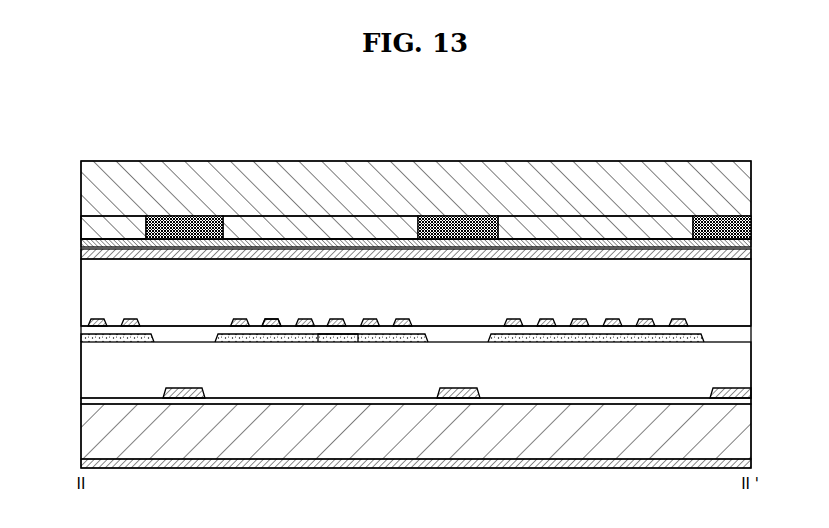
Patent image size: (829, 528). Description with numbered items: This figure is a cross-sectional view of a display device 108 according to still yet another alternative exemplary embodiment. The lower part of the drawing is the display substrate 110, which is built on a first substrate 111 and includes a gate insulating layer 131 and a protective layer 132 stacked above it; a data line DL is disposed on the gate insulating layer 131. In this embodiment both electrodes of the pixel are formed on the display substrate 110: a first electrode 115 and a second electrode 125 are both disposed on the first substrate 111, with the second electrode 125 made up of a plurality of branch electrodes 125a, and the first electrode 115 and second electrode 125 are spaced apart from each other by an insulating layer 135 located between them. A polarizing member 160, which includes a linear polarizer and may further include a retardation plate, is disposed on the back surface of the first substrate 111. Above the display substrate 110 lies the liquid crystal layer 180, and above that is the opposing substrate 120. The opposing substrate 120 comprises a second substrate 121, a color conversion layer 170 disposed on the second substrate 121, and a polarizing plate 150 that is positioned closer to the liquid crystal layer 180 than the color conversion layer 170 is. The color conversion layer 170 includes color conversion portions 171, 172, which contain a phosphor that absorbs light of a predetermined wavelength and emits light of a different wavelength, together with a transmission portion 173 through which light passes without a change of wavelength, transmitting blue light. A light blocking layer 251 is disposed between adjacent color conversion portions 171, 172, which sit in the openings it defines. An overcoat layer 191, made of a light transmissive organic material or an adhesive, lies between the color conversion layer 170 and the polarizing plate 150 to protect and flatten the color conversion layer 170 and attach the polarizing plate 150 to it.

The display device 108 is at (112, 105).
The display substrate 110 is at (760, 326).
The first substrate 111 is at (88, 431).
The first electrode 115 is at (88, 336).
The opposing substrate 120 is at (760, 161).
The second substrate 121 is at (380, 190).
The second electrode 125 is at (412, 306).
The branch electrodes 125a is at (272, 326).
The gate insulating layer 131 is at (86, 399).
The protective layer 132 is at (88, 369).
The insulating layer 135 is at (338, 331).
The polarizing plate 150 is at (82, 252).
The polarizing member 160 is at (86, 463).
The color conversion layer 170 is at (80, 223).
The color conversion portion 171 is at (328, 227).
The color conversion portion 172 is at (548, 228).
The transmission portion 173 is at (110, 227).
The liquid crystal layer 180 is at (90, 293).
The overcoat layer 191 is at (82, 247).
The light blocking layer 251 is at (185, 225).
The data line DL is at (183, 398).